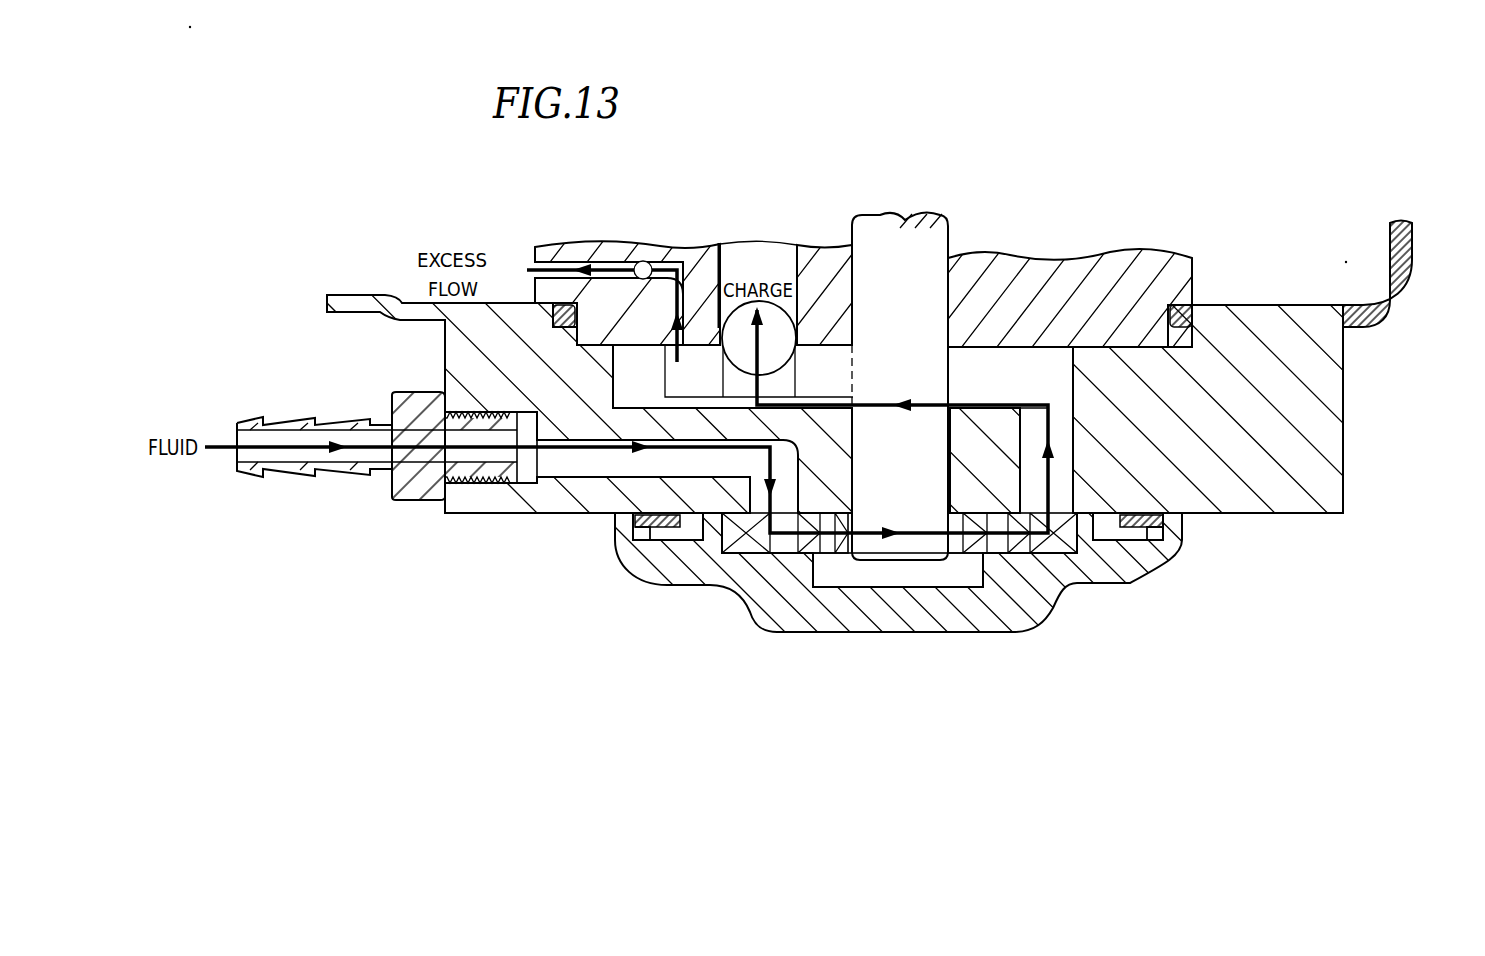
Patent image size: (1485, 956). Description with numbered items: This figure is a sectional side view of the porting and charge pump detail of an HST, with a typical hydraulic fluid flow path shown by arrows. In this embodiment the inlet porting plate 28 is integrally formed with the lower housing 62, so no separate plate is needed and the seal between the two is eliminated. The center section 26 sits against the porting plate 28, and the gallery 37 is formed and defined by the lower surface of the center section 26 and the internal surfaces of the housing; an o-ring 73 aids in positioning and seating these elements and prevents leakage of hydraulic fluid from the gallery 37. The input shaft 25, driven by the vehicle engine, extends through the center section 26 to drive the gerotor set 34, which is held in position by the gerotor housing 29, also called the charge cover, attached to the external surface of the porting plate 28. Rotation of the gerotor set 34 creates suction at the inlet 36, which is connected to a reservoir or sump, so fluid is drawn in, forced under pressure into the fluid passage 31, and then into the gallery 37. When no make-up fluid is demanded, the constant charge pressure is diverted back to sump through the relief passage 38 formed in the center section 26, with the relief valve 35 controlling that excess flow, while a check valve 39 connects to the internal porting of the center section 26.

The input shaft 25 is at (948, 232).
The center section 26 is at (1062, 262).
The inlet porting plate 28 is at (1345, 426).
The gerotor housing 29 is at (958, 634).
The fluid passage 31 is at (1163, 514).
The gerotor set 34 is at (1057, 548).
The relief valve 35 is at (635, 290).
The inlet 36 is at (250, 470).
The gallery 37 is at (661, 392).
The relief passage 38 is at (598, 262).
The check valve 39 is at (727, 330).
The lower housing 62 is at (1412, 262).
The o-ring 73 is at (1195, 315).